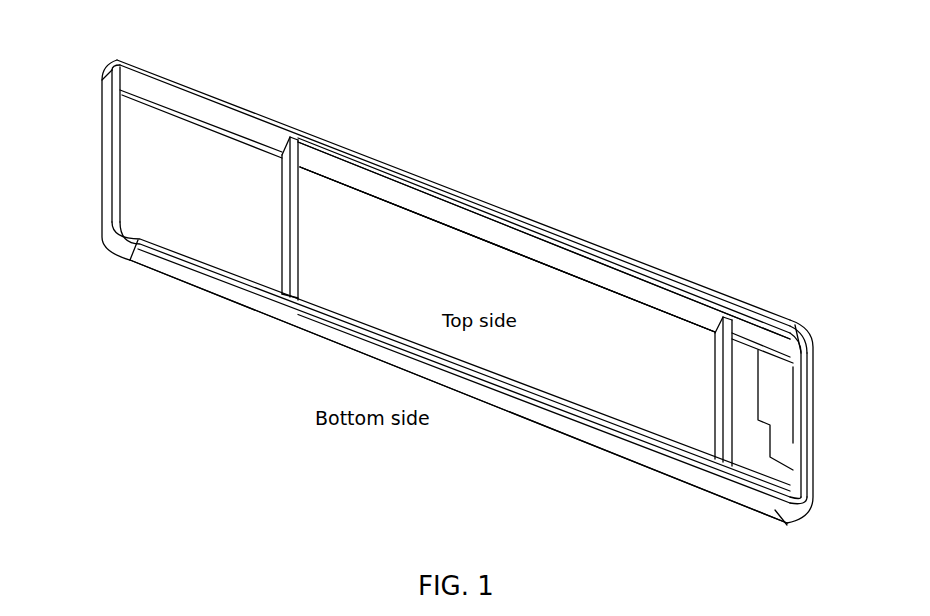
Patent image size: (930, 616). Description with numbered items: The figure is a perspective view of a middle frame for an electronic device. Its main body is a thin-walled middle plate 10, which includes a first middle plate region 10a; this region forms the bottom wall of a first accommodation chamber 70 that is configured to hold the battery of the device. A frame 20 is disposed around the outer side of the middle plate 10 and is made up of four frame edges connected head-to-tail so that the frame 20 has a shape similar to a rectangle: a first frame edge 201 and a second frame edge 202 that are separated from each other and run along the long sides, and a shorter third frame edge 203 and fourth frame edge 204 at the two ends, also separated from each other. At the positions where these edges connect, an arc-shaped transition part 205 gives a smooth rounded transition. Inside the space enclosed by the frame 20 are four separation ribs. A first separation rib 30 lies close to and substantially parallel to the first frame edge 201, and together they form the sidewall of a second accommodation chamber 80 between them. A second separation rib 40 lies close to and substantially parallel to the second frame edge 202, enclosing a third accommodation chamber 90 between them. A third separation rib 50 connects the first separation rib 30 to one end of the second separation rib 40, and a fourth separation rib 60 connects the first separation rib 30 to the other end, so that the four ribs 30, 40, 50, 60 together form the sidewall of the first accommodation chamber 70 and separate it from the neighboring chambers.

The middle plate 10 is at (408, 230).
The first middle plate region 10a is at (408, 230).
The frame 20 is at (233, 103).
The first separation rib 30 is at (557, 262).
The second separation rib 40 is at (507, 380).
The third separation rib 50 is at (298, 178).
The fourth separation rib 60 is at (728, 337).
The first accommodation chamber 70 is at (485, 257).
The second accommodation chamber 80 is at (658, 283).
The third accommodation chamber 90 is at (343, 328).
The first frame edge 201 is at (165, 90).
The second frame edge 202 is at (198, 280).
The third frame edge 203 is at (102, 138).
The fourth frame edge 204 is at (810, 390).
The arc-shaped transition part 205 is at (120, 60).